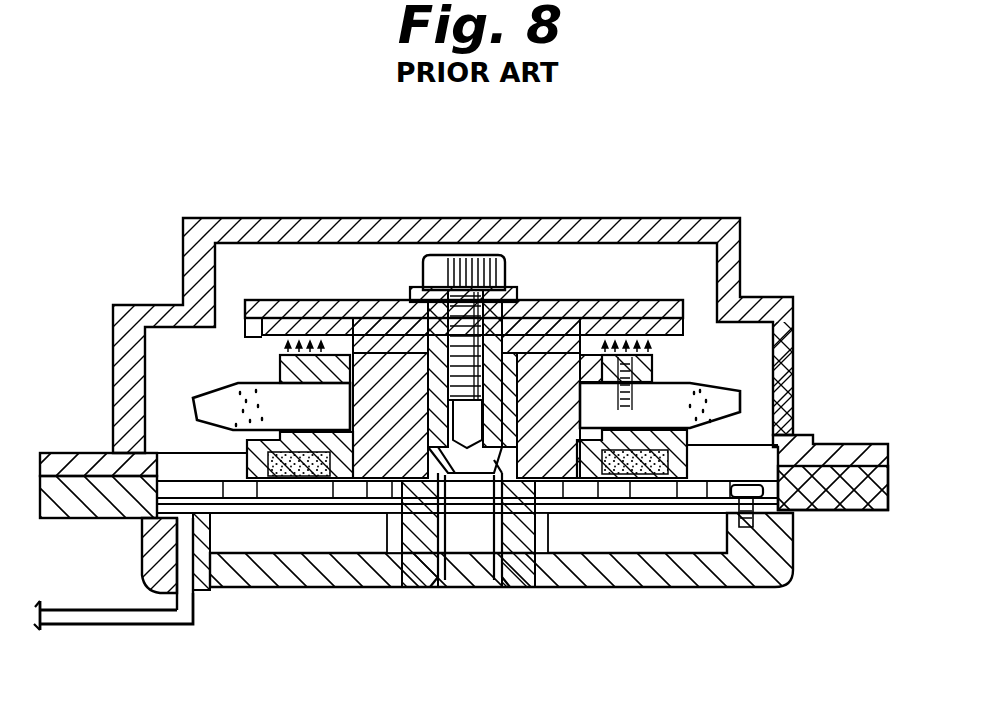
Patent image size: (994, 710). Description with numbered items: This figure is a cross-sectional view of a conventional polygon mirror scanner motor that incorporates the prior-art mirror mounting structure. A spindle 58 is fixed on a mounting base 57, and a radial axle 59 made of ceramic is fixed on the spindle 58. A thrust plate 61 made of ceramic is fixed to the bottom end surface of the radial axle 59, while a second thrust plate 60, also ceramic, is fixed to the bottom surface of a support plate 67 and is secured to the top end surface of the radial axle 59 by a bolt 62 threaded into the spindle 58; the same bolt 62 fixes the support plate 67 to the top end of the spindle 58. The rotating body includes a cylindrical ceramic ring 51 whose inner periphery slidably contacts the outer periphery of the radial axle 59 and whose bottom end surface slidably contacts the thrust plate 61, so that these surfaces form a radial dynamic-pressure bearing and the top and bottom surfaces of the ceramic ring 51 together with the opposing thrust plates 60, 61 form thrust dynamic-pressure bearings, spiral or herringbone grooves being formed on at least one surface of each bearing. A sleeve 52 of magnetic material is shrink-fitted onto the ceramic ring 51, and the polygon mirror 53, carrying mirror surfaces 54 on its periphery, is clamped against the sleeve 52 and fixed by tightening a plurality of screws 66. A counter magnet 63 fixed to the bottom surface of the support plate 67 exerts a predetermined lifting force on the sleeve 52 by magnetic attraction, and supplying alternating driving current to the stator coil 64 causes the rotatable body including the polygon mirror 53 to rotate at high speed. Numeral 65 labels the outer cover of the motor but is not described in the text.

The ceramic ring 51 is at (617, 298).
The sleeve 52 is at (653, 382).
The polygon mirror 53 is at (727, 404).
The mirror surfaces 54 is at (747, 394).
The mounting base 57 is at (763, 567).
The spindle 58 is at (470, 557).
The radial axle 59 is at (430, 440).
The thrust plate 60 is at (553, 333).
The thrust plate 61 is at (573, 463).
The bolt 62 is at (465, 262).
The counter magnet 63 is at (673, 327).
The stator coil 64 is at (692, 493).
The cover 65 is at (273, 232).
The screws 66 is at (653, 363).
The support plate 67 is at (728, 320).